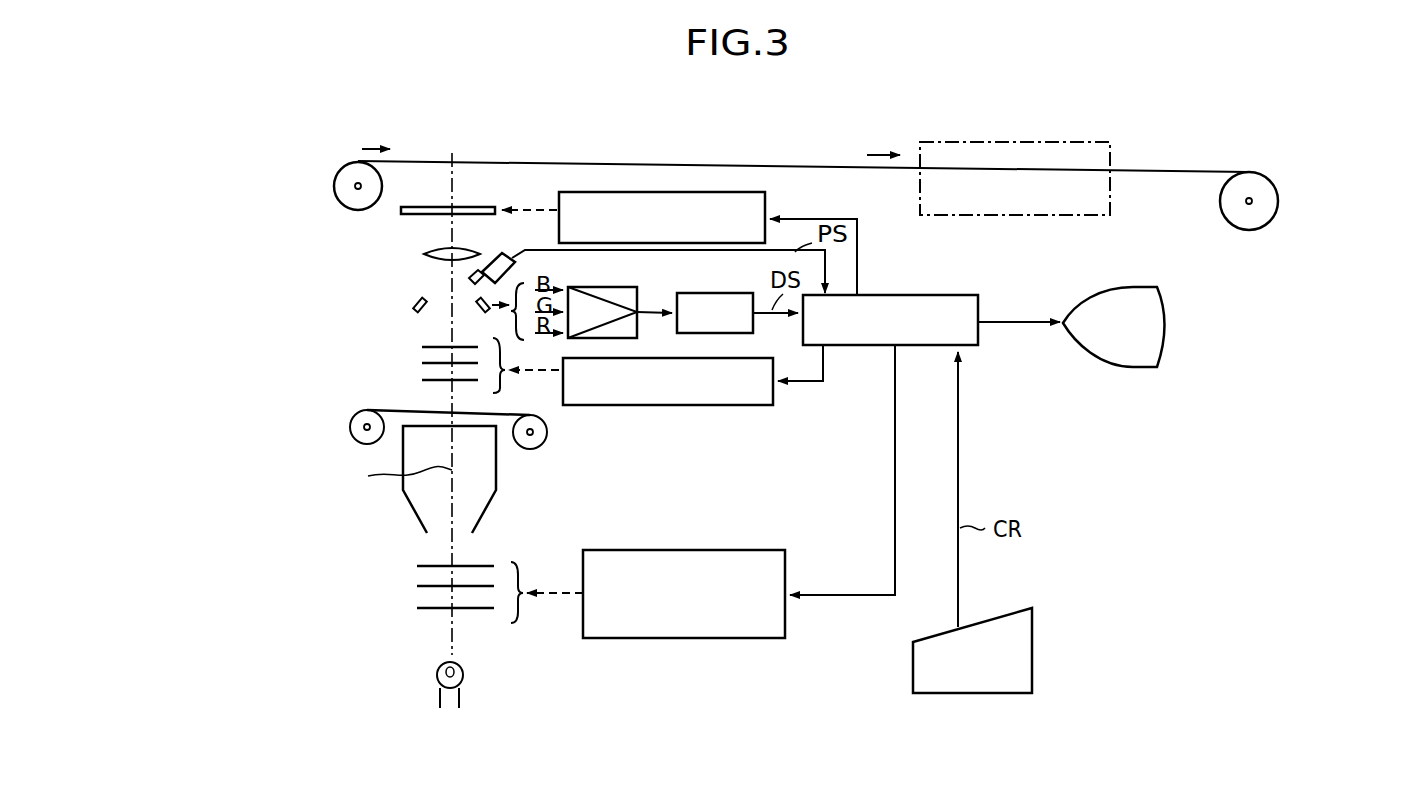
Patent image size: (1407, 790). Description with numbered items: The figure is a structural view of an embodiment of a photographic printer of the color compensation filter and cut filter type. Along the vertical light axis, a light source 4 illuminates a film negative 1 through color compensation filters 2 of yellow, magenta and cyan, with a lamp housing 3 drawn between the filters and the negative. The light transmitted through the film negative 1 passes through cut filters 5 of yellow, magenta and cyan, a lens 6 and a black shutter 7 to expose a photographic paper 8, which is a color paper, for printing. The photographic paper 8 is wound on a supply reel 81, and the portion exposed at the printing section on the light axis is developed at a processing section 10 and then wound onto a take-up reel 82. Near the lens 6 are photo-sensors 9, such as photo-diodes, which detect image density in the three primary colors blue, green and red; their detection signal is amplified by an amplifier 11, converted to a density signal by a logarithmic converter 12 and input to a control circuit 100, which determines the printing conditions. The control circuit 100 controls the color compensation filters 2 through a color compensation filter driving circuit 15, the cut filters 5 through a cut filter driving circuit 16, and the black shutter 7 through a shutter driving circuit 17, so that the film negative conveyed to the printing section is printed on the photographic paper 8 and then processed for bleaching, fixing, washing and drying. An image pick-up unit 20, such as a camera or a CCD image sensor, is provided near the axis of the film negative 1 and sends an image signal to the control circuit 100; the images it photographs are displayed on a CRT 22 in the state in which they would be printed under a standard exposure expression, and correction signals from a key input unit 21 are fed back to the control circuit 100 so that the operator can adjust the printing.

The film negative 1 is at (380, 409).
The color compensation filters 2 is at (499, 560).
The lamp house 3 is at (497, 479).
The light source 4 is at (465, 678).
The cut filters 5 is at (397, 334).
The lens 6 is at (470, 252).
The black shutter 7 is at (478, 206).
The photographic paper 8 is at (468, 160).
The photo-sensors 9 is at (414, 297).
The processing section 10 is at (1092, 216).
The amplifier 11 is at (612, 291).
The logarithmic converter 12 is at (717, 293).
The color compensation filter driving circuit 15 is at (787, 581).
The cut filter driving circuit 16 is at (710, 406).
The shutter driving circuit 17 is at (767, 206).
The image pick-up unit 20 is at (506, 254).
The key input unit 21 is at (1034, 652).
The CRT 22 is at (1130, 368).
The supply reel 81 is at (335, 183).
The take-up reel 82 is at (1249, 231).
The control circuit 100 is at (913, 294).